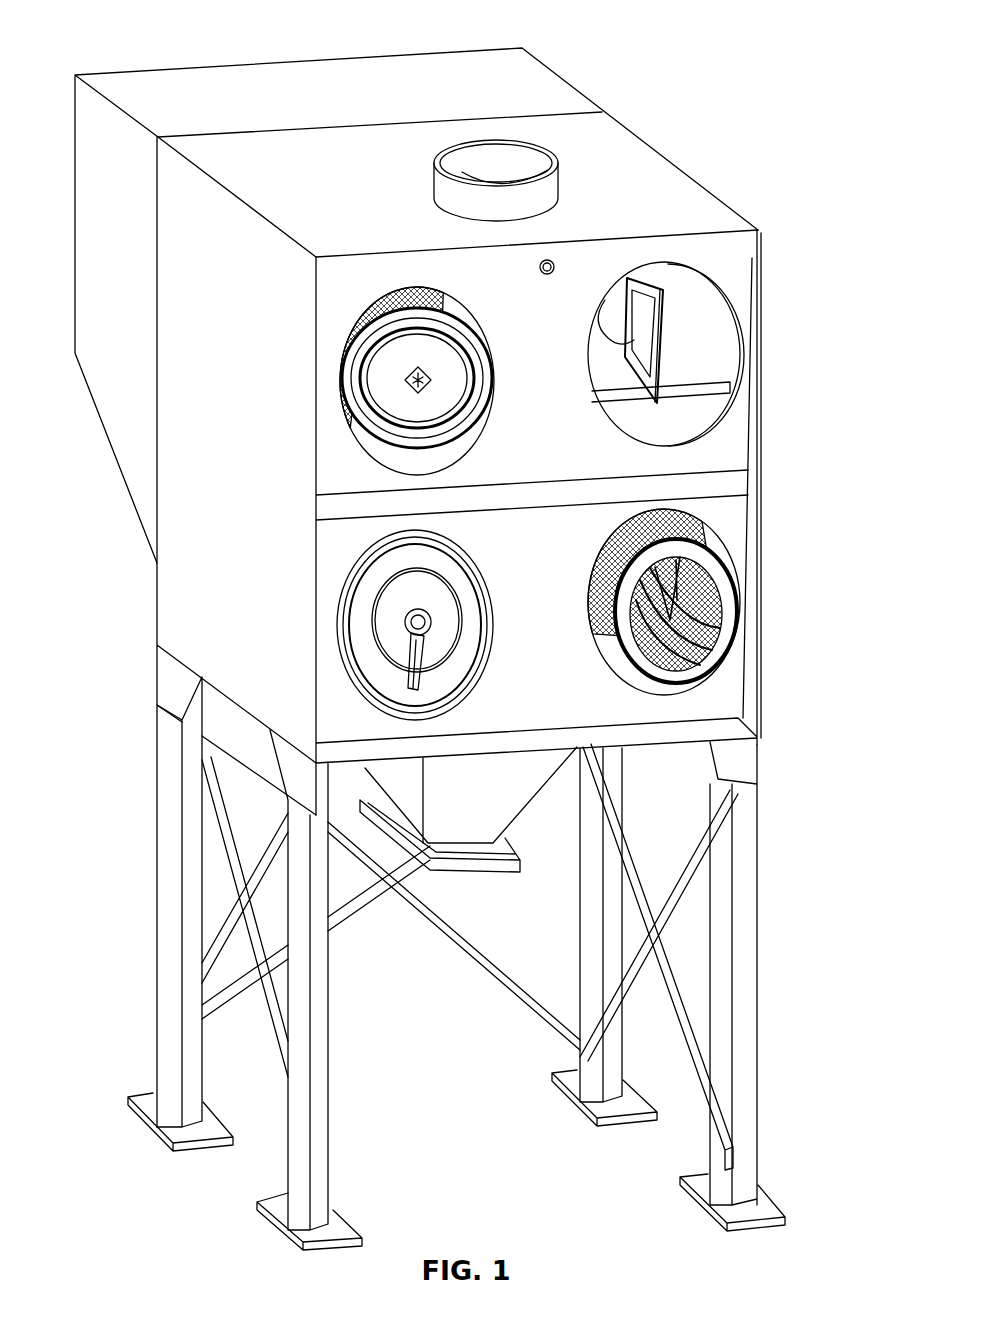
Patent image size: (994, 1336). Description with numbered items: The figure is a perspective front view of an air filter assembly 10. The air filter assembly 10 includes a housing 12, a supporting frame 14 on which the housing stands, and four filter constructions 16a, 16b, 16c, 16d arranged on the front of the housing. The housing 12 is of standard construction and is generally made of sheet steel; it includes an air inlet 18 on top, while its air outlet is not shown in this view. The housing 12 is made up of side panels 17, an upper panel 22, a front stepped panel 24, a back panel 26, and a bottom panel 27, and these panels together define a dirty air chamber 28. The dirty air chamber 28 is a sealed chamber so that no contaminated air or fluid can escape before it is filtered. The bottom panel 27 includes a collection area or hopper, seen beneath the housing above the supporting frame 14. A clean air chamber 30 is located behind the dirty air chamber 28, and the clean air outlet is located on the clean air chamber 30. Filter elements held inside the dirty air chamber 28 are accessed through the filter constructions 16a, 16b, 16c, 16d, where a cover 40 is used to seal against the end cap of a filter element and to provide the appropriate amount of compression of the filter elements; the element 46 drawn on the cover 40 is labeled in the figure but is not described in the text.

The air filter assembly 10 is at (126, 42).
The housing 12 is at (760, 232).
The supporting frame 14 is at (752, 900).
The filter construction 16a is at (437, 349).
The filter construction 16b is at (669, 360).
The filter construction 16c is at (409, 623).
The filter construction 16d is at (665, 605).
The side panels 17 is at (167, 605).
The air inlet 18 is at (557, 163).
The upper panel 22 is at (712, 212).
The front stepped panel 24 is at (730, 450).
The back panel 26 is at (700, 410).
The bottom panel 27 is at (522, 786).
The dirty air chamber 28 is at (638, 432).
The clean air chamber 30 is at (92, 323).
The cover 40 is at (375, 632).
The handle 46 is at (400, 672).